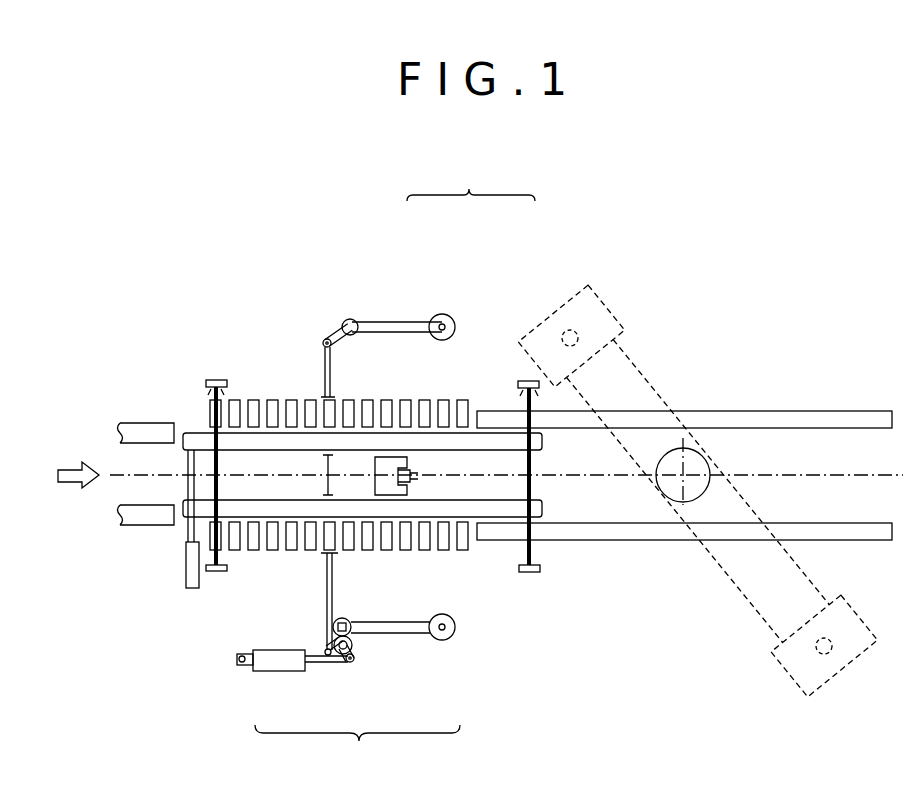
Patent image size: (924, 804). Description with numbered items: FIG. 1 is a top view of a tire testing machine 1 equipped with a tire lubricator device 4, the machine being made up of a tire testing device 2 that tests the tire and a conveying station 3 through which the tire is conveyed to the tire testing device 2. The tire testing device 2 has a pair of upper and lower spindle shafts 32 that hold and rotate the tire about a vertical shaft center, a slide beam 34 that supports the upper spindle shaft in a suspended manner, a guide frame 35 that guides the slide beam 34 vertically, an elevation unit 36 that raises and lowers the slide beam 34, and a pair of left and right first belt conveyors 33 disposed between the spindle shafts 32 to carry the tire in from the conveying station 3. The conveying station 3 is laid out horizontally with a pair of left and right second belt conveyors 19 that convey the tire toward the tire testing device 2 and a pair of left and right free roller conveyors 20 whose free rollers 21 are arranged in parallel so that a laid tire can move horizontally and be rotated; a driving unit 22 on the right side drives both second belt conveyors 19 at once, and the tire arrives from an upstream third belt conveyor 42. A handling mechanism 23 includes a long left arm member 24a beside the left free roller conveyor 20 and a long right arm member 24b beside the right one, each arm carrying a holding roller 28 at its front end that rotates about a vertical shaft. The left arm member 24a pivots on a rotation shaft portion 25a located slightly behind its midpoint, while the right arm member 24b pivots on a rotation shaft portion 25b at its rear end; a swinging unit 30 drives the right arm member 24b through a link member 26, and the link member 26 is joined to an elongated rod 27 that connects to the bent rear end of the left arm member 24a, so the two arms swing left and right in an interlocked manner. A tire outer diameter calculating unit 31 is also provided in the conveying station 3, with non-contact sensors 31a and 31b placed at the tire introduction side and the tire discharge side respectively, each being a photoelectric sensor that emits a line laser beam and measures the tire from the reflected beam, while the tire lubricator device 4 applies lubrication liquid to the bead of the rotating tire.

The tire testing machine 1 is at (471, 181).
The tire testing device 2 is at (562, 255).
The conveying station 3 is at (372, 252).
The tire lubricator device 4 is at (408, 490).
The second belt conveyors 19 is at (197, 428).
The free roller conveyors 20 is at (339, 476).
The free rollers 21 is at (272, 402).
The driving unit 22 is at (193, 588).
The handling mechanism 23 is at (348, 662).
The left arm member 24a is at (390, 320).
The right arm member 24b is at (408, 635).
The rotation shaft portion 25a is at (350, 320).
The rotation shaft portion 25b is at (353, 640).
The link member 26 is at (355, 664).
The rod 27 is at (327, 630).
The holding roller 28 is at (450, 313).
The swinging unit 30 is at (277, 672).
The tire outer diameter calculating unit 31 is at (371, 474).
The non-contact sensor 31a is at (215, 378).
The non-contact sensor 31b is at (529, 573).
The spindle shaft 32 is at (710, 450).
The first belt conveyors 33 is at (867, 410).
The slide beam 34 is at (637, 368).
The guide frame 35 is at (605, 293).
The elevation unit 36 is at (560, 328).
The third belt conveyor 42 is at (139, 422).